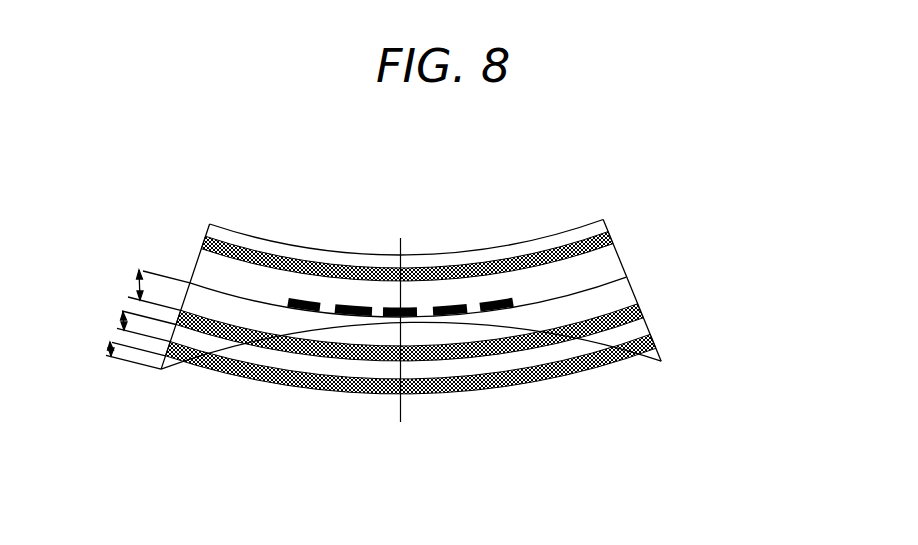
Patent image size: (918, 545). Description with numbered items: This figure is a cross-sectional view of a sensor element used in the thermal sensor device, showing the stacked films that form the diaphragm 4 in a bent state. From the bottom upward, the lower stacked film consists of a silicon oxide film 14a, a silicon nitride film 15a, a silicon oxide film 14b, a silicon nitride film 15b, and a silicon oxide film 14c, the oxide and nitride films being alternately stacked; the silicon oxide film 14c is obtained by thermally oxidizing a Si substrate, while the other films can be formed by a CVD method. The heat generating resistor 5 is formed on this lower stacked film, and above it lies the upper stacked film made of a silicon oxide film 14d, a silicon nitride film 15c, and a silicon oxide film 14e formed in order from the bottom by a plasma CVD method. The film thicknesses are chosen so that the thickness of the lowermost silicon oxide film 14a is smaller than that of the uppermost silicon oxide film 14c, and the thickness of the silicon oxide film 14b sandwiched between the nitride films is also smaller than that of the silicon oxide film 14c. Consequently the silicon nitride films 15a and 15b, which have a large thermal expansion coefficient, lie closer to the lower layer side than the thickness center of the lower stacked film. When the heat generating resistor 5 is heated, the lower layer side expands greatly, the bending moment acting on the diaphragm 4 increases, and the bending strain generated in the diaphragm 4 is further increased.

The diaphragm 4 is at (238, 194).
The heat generating resistor 5 is at (353, 309).
The silicon oxide film 14a is at (355, 422).
The silicon oxide film 14b is at (199, 396).
The silicon oxide film 14c is at (183, 361).
The silicon oxide film 14d is at (461, 260).
The silicon oxide film 14e is at (448, 204).
The silicon nitride film 15a is at (411, 414).
The silicon nitride film 15b is at (419, 379).
The silicon nitride film 15c is at (407, 223).